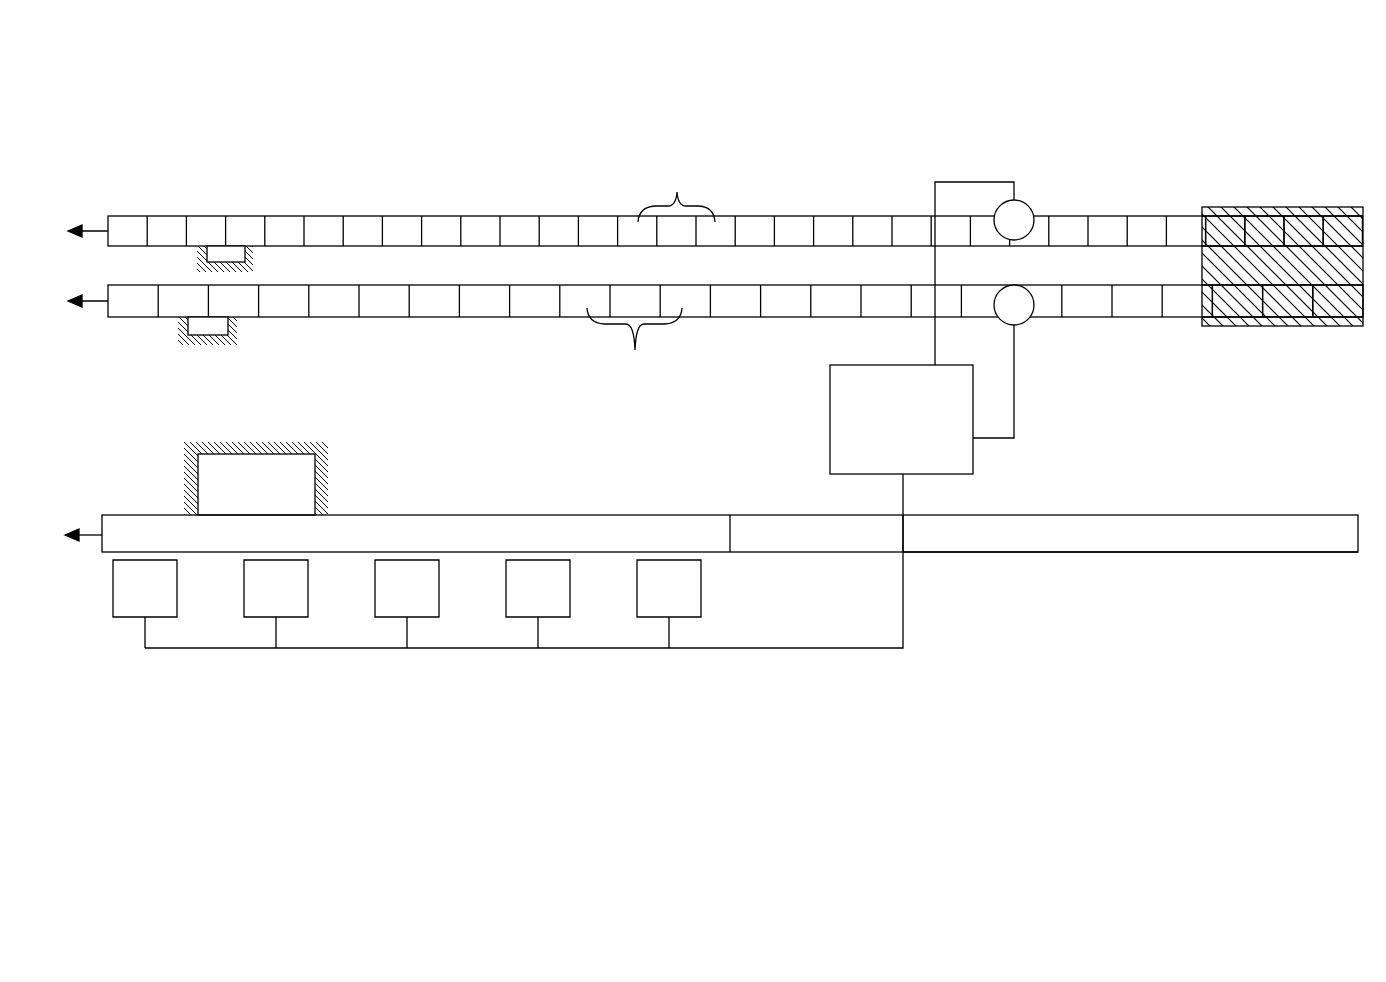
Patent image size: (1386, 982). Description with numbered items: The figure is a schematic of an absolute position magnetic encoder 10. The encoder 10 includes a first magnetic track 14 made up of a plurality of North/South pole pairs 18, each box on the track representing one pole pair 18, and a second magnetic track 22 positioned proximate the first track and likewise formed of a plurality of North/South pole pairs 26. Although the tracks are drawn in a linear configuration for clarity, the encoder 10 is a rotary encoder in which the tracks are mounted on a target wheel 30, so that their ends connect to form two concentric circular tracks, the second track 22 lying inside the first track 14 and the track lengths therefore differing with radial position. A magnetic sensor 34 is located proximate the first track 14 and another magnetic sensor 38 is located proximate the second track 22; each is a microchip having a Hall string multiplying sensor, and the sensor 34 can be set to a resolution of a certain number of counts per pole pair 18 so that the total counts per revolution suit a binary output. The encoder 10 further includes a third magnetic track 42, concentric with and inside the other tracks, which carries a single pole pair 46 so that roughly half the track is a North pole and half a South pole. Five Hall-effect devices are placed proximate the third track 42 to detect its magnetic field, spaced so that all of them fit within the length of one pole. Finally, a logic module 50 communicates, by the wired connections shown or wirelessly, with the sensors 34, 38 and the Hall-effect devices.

The absolute position magnetic encoder 10 is at (1319, 124).
The first magnetic track 14 is at (1144, 202).
The North/South pole pairs 18 is at (676, 189).
The second magnetic track 22 is at (1140, 334).
The North/South pole pairs 26 is at (634, 347).
The target wheel 30 is at (240, 254).
The magnetic sensor 34 is at (1020, 211).
The magnetic sensor 38 is at (1018, 318).
The third magnetic track 42 is at (1135, 501).
The single pole pair 46 is at (1087, 553).
The logic module 50 is at (830, 428).